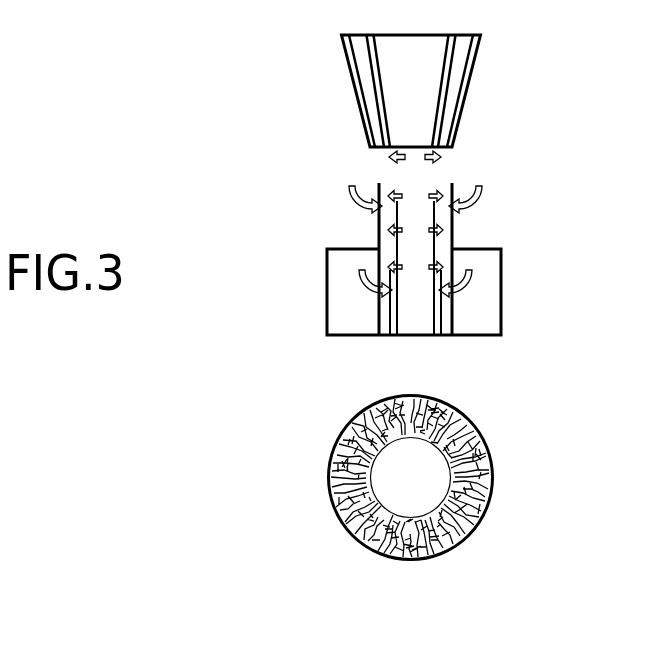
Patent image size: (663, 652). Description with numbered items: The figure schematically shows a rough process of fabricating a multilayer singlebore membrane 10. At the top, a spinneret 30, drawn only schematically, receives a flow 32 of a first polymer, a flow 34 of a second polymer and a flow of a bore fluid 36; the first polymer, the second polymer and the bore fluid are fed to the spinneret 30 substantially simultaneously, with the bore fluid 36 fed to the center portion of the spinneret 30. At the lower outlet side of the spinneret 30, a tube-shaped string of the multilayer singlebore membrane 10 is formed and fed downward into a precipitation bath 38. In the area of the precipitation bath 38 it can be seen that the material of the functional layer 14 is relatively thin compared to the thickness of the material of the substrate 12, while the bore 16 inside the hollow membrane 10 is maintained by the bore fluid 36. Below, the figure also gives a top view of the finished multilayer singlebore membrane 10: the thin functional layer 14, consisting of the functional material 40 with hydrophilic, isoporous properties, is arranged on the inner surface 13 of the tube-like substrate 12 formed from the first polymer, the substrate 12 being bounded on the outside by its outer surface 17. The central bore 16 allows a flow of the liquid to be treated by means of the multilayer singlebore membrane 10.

The multilayer singlebore membrane 10 is at (373, 575).
The substrate 12 is at (382, 246).
The inner surface 13 is at (364, 334).
The functional layer 14 is at (366, 336).
The bore 16 is at (431, 278).
The outer surface 17 is at (493, 470).
The spinneret 30 is at (350, 68).
The flow of polymer 1 32 is at (464, 47).
The flow of polymer 2 34 is at (454, 106).
The bore fluid 36 is at (424, 135).
The precipitation bath 38 is at (484, 293).
The functional material 40 is at (437, 528).